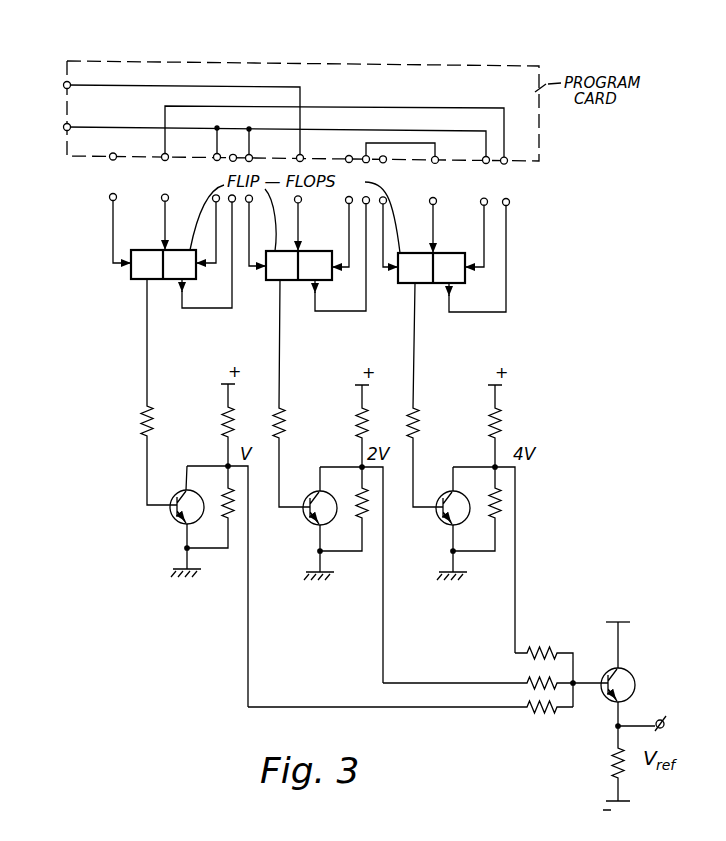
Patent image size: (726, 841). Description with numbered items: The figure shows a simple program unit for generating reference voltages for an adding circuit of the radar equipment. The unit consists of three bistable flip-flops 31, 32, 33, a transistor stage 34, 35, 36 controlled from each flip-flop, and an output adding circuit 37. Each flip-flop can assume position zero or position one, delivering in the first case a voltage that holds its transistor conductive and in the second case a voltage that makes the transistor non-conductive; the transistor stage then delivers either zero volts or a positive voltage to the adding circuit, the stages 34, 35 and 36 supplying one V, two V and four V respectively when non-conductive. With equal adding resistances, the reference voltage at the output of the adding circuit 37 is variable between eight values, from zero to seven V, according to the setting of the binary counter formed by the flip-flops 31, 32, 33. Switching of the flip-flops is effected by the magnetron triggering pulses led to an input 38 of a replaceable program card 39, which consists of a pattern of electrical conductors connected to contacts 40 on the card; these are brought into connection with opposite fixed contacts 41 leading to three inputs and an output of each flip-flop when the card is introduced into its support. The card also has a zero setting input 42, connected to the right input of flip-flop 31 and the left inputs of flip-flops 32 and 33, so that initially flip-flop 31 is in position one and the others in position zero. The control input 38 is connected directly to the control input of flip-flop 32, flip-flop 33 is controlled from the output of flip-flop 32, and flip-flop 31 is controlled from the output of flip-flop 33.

The bistable flip-flop 31 is at (143, 268).
The bistable flip-flop 32 is at (282, 268).
The bistable flip-flop 33 is at (418, 267).
The transistor stage 34 is at (173, 488).
The transistor stage 35 is at (310, 488).
The transistor stage 36 is at (442, 488).
The output adding circuit 37 is at (595, 653).
The input 38 is at (66, 84).
The replaceable program card 39 is at (290, 62).
The contacts 40 is at (514, 166).
The fixed contacts 41 is at (107, 193).
The zero setting input 42 is at (66, 126).